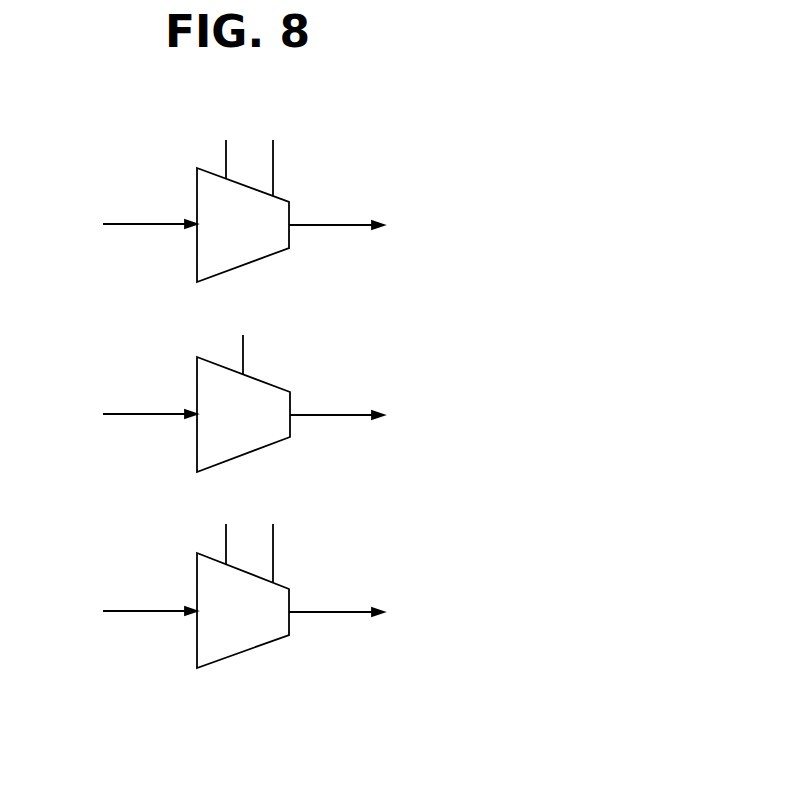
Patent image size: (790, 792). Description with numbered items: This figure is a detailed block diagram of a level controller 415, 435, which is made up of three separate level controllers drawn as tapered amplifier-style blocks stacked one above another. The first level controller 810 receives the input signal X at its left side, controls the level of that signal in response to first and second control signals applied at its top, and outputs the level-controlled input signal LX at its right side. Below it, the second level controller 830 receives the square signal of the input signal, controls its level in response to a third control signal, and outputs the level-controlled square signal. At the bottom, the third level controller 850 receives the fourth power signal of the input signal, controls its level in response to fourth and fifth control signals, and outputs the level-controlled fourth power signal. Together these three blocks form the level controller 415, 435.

The level controller 415 is at (373, 389).
The level controller 435 is at (373, 389).
The first level controller 810 is at (258, 258).
The second level controller 830 is at (273, 444).
The third level controller 850 is at (260, 645).